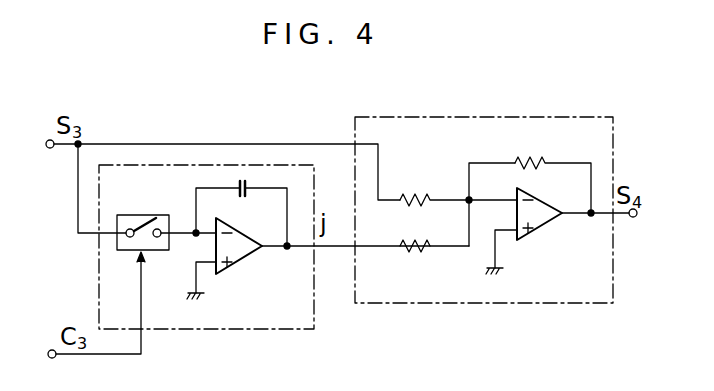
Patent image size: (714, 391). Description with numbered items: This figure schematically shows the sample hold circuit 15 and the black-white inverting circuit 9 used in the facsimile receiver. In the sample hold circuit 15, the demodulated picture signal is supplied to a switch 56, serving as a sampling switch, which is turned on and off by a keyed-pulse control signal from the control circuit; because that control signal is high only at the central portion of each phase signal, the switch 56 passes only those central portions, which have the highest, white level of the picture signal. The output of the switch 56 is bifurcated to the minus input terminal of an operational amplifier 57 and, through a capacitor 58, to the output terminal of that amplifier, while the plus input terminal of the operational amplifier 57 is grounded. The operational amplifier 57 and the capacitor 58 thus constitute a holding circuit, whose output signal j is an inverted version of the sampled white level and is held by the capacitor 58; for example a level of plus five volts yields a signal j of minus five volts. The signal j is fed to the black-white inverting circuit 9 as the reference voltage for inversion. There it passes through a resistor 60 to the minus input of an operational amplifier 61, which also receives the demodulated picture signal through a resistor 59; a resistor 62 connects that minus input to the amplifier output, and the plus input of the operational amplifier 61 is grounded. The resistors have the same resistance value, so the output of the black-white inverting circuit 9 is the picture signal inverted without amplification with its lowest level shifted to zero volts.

The black-white inverting circuit 9 is at (515, 117).
The sample hold circuit 15 is at (190, 165).
The switch 56 is at (131, 214).
The operational amplifier 57 is at (244, 262).
The capacitor 58 is at (247, 181).
The resistor 59 is at (414, 195).
The resistor 60 is at (410, 252).
The operational amplifier 61 is at (542, 228).
The resistor 62 is at (522, 160).